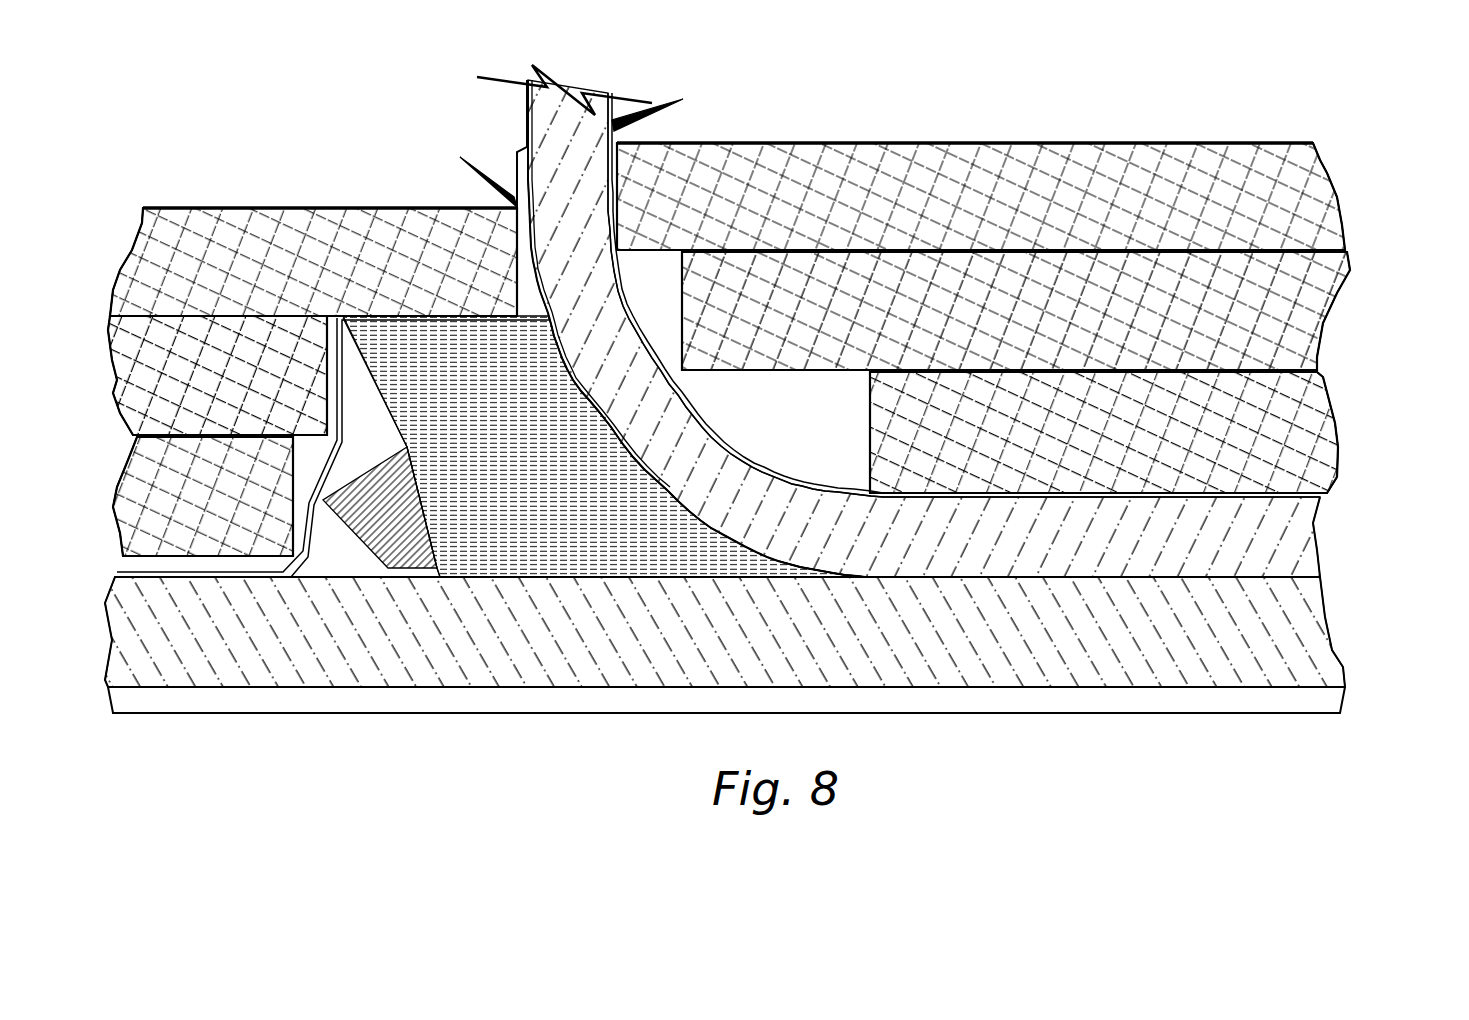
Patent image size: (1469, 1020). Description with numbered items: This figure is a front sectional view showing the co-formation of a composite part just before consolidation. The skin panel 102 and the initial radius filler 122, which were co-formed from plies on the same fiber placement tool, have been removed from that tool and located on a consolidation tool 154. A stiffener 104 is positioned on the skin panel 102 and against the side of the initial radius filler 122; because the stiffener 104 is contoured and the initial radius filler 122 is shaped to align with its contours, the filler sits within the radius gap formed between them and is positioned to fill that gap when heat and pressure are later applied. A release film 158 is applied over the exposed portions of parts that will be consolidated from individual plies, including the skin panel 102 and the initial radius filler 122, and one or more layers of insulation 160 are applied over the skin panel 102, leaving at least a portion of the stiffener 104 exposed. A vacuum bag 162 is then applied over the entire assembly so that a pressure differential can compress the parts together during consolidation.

The skin panel 102 is at (1307, 625).
The stiffener 104 is at (1293, 540).
The initial radius filler 122 is at (348, 564).
The consolidation tool 154 is at (1228, 697).
The release film 158 is at (1290, 497).
The layers of insulation 160 is at (1307, 410).
The vacuum bag 162 is at (1252, 143).